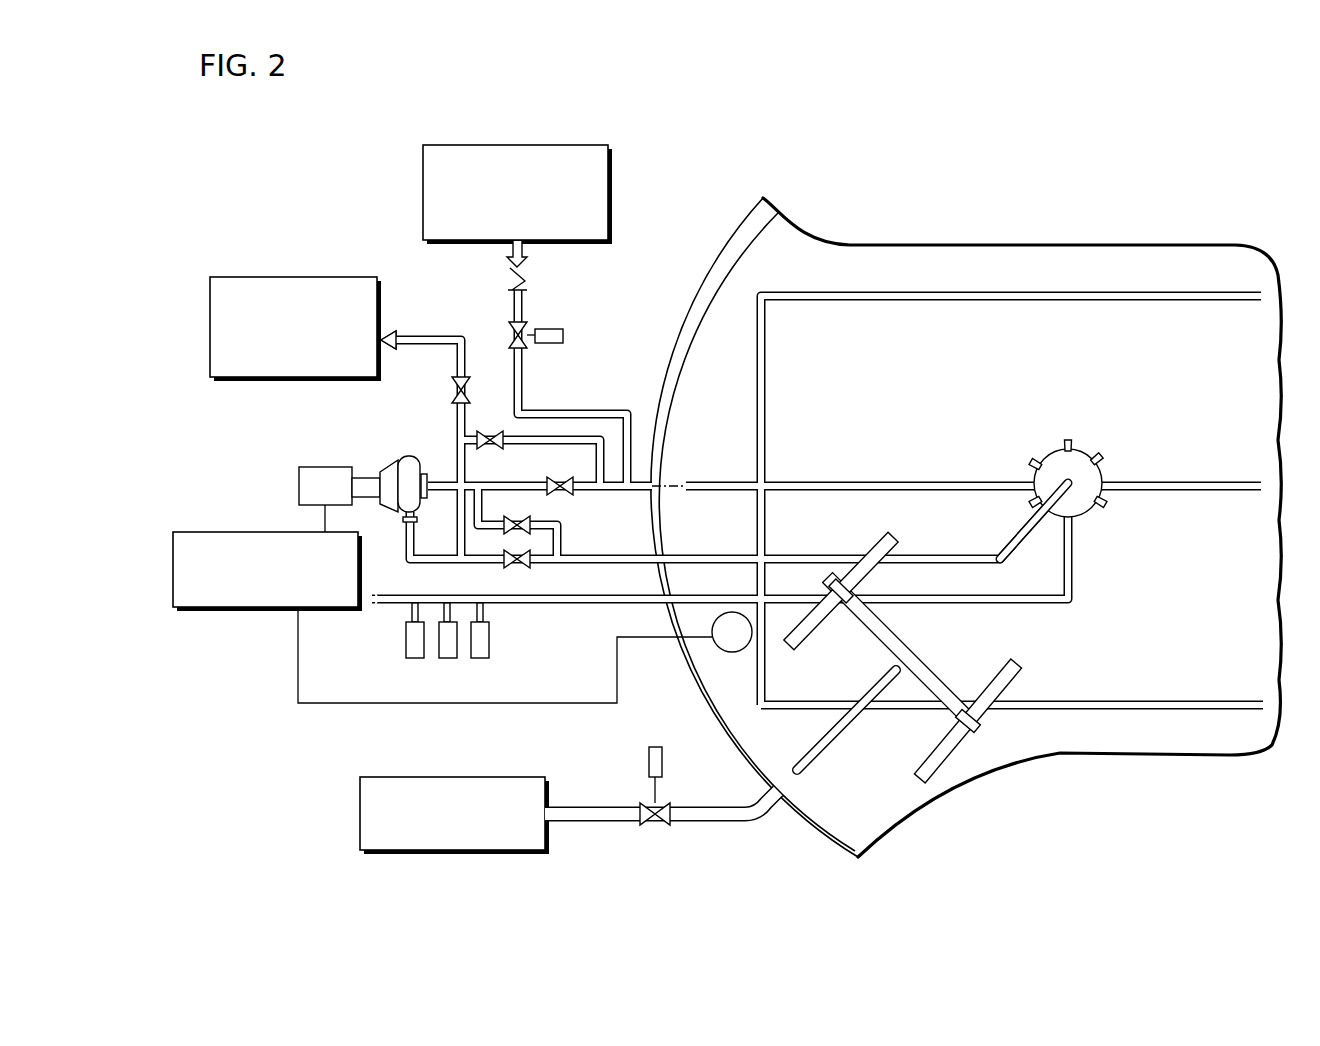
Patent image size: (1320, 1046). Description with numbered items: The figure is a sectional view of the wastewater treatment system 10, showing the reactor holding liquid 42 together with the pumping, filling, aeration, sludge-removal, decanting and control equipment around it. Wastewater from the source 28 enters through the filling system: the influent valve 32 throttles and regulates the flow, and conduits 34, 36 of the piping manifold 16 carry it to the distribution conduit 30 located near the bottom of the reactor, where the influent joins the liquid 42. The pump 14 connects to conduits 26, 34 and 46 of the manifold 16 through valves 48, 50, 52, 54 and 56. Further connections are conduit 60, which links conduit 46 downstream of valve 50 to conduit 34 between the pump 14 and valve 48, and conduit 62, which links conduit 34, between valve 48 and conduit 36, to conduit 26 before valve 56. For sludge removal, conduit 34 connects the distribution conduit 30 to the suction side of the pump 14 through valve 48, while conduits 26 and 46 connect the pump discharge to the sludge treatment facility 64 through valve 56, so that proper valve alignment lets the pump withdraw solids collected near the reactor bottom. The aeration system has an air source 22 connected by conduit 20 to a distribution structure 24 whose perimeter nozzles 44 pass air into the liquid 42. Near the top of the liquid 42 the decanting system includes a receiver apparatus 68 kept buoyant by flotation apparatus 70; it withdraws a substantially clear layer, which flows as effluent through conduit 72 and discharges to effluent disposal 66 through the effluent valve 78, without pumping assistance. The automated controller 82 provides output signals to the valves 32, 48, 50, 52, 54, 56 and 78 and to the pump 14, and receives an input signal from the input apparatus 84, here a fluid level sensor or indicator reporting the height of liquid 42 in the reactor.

The wastewater treatment system 10 is at (316, 187).
The pump 14 is at (395, 465).
The piping manifold 16 is at (452, 456).
The conduit 20 is at (560, 605).
The air source 22 is at (405, 640).
The distribution structure 24 is at (1079, 496).
The sludge conduit 26 is at (458, 517).
The wastewater source 28 is at (557, 145).
The distribution conduit 30 is at (1088, 300).
The influent valve 32 is at (527, 333).
The conduit 34 is at (645, 490).
The conduit 36 is at (522, 385).
The liquid 42 is at (1213, 631).
The nozzles 44 is at (1106, 486).
The conduit 46 is at (588, 556).
The valve 48 is at (552, 478).
The valve 50 is at (521, 567).
The valve 52 is at (528, 512).
The valve 54 is at (494, 448).
The valve 56 is at (469, 392).
The conduit 60 is at (560, 524).
The conduit 62 is at (553, 447).
The sludge treatment facility 64 is at (290, 277).
The effluent disposal 66 is at (360, 837).
The receiver apparatus 68 is at (888, 630).
The flotation apparatus 70 is at (897, 540).
The conduit 72 is at (840, 745).
The effluent valve 78 is at (657, 826).
The controller 82 is at (178, 608).
The input apparatus 84 is at (718, 646).